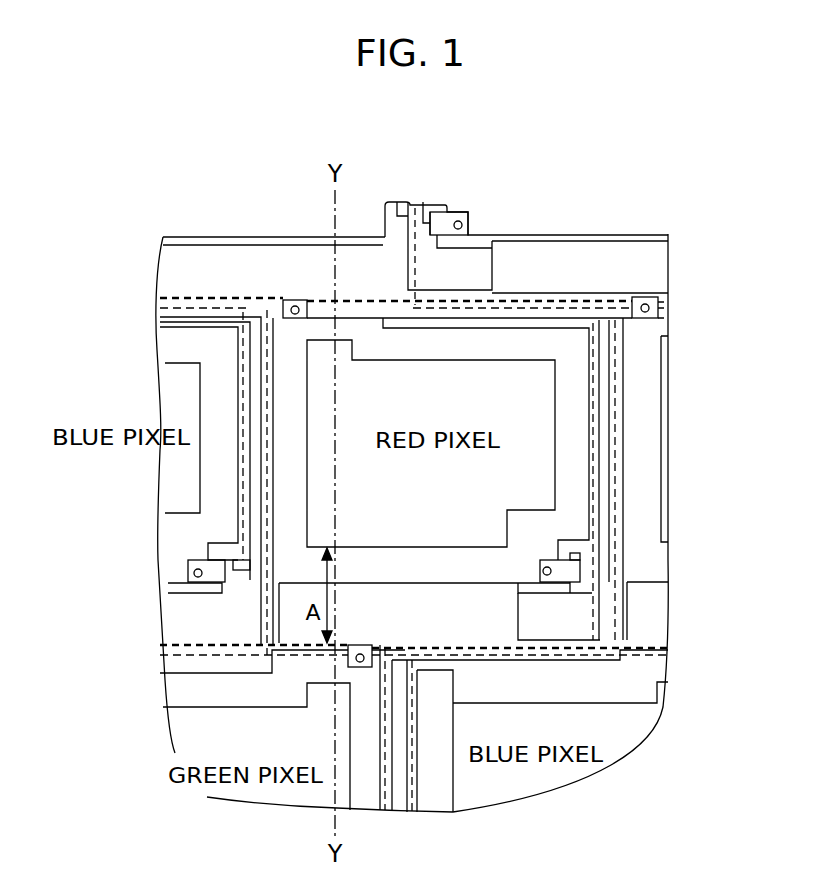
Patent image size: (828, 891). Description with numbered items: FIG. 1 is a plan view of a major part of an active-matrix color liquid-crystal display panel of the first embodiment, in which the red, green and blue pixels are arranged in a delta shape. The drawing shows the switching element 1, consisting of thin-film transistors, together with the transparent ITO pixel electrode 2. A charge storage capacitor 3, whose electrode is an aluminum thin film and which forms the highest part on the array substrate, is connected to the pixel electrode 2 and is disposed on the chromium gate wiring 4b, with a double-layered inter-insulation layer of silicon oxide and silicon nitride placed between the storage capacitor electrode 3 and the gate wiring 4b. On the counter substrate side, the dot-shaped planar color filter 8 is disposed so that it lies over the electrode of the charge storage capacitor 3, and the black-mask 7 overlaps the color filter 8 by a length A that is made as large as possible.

The switching element 1 is at (590, 571).
The pixel electrode 2 is at (590, 483).
The charge storage capacitor 3 is at (477, 623).
The gate wiring 4b is at (552, 622).
The black-mask 7 is at (662, 413).
The color filter 8 is at (610, 370).